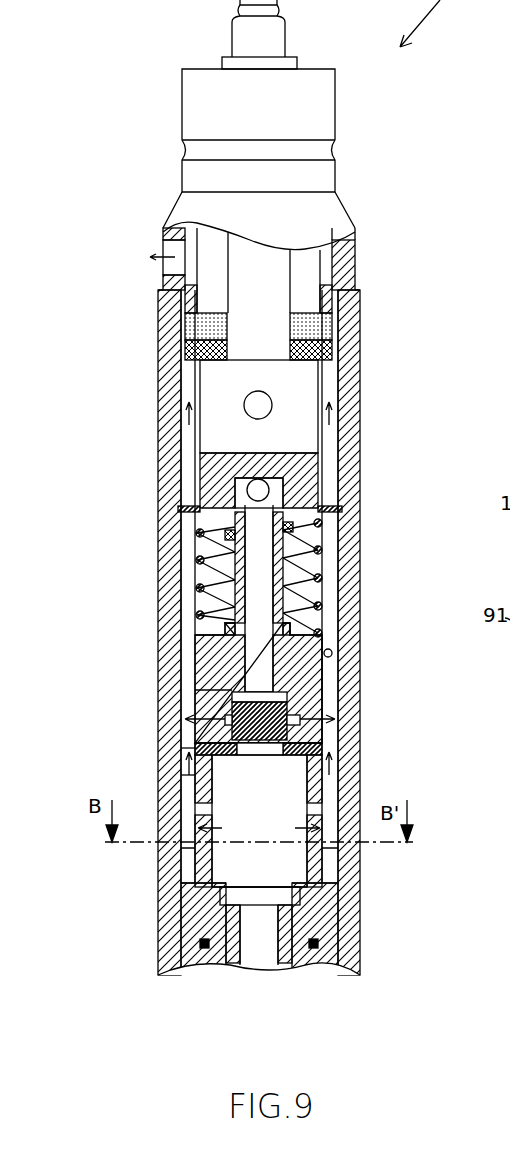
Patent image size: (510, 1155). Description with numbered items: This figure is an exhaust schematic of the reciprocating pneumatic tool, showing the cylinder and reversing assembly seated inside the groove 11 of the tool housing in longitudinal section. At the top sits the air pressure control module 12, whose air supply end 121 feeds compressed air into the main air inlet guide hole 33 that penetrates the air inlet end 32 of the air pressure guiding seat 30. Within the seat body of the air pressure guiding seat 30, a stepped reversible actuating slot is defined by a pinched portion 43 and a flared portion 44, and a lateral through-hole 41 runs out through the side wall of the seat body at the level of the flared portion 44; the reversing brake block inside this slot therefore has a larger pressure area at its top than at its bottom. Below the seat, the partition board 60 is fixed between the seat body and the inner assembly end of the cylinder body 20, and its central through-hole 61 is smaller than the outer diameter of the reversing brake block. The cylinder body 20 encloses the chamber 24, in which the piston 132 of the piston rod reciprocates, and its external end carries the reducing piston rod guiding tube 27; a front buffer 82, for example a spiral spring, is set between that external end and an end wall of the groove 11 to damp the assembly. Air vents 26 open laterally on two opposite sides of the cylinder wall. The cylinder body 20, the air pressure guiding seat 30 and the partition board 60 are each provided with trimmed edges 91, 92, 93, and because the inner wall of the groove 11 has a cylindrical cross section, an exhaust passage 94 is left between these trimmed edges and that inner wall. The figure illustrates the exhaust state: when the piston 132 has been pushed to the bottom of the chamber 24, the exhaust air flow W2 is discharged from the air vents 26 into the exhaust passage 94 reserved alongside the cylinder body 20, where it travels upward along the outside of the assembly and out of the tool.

The groove 11 is at (195, 572).
The air pressure control module 12 is at (197, 445).
The cylinder body 20 is at (323, 917).
The chamber 24 is at (215, 884).
The air vents 26 is at (195, 848).
The reducing piston rod guiding tube 27 is at (330, 960).
The air pressure guiding seat 30 is at (200, 676).
The air inlet end 32 is at (338, 590).
The main air inlet guide hole 33 is at (197, 655).
The lateral through-hole 41 is at (340, 725).
The pinched portion 43 is at (340, 700).
The flared portion 44 is at (338, 745).
The partition board 60 is at (200, 744).
The through-hole 61 is at (270, 755).
The front buffer 82 is at (203, 945).
The trimmed edge 91 is at (182, 775).
The trimmed edge 92 is at (182, 748).
The trimmed edge 93 is at (195, 698).
The exhaust passage 94 is at (333, 655).
The air supply end 121 is at (340, 540).
The piston 132 is at (338, 873).
The exhaust air flow W2 is at (185, 410).